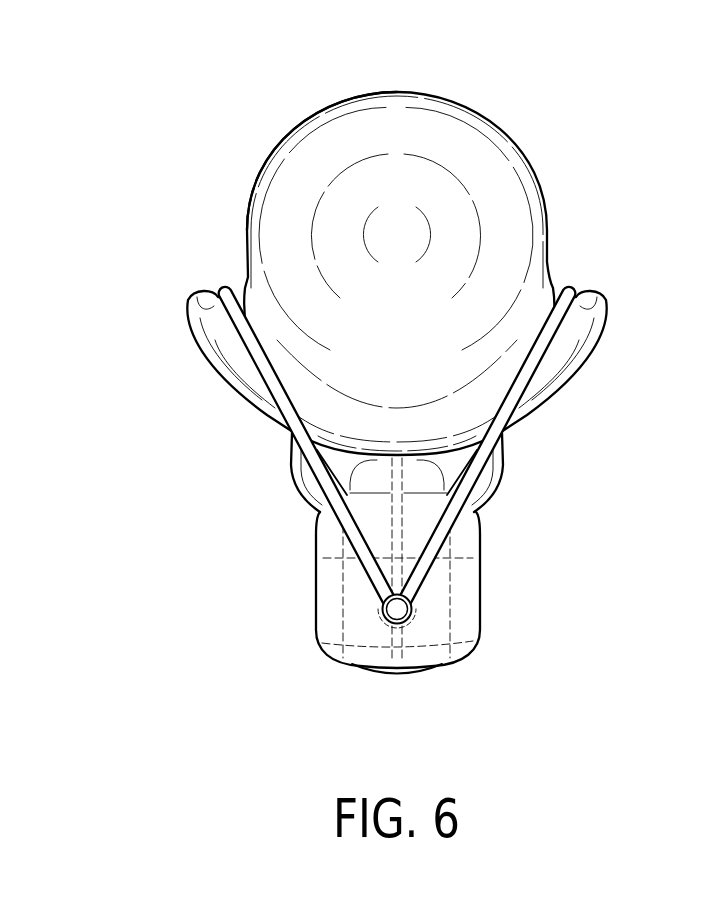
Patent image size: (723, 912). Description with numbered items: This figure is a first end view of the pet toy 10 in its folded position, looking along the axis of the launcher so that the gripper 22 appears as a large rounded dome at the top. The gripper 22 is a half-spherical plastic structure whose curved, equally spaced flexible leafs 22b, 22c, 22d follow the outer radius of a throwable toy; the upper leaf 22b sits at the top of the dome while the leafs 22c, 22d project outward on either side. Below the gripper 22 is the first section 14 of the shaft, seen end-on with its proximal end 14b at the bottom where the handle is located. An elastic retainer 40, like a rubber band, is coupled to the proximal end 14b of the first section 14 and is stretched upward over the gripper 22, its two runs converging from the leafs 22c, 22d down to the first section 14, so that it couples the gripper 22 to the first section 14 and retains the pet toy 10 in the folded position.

The pet toy 10 is at (393, 386).
The gripper 22 is at (427, 92).
The flexible leaf 22b is at (345, 100).
The flexible leaf 22c is at (185, 302).
The flexible leaf 22d is at (608, 302).
The retainer 40 is at (520, 387).
The first section 14 is at (460, 662).
The proximal end 14b is at (337, 665).